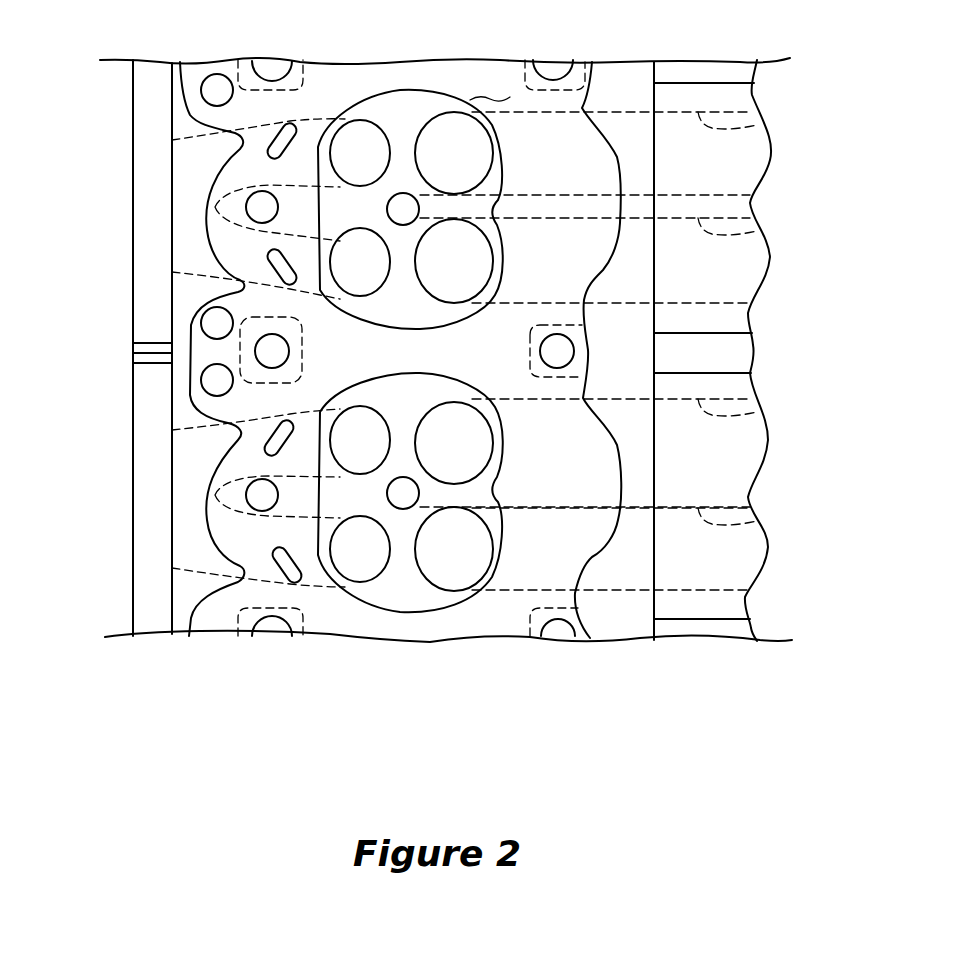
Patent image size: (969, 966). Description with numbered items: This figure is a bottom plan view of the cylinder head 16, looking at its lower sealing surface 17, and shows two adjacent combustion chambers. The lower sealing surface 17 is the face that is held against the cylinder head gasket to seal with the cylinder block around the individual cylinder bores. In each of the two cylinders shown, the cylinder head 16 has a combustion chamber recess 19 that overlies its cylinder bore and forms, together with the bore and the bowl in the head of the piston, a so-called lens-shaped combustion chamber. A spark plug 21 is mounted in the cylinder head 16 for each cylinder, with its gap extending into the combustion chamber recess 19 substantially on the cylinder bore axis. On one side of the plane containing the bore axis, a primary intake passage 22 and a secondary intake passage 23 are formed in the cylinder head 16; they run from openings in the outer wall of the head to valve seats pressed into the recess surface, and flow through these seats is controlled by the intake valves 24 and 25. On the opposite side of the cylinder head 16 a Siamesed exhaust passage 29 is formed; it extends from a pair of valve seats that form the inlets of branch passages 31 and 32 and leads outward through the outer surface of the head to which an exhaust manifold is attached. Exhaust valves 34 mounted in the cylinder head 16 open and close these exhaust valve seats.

The cylinder head 16 is at (132, 492).
The lower sealing surface 17 is at (490, 82).
The combustion chamber recess 19 is at (420, 105).
The spark plug 21 is at (403, 218).
The primary intake passage 22 is at (757, 125).
The secondary intake passage 23 is at (757, 231).
The intake valve 24 is at (475, 155).
The intake valve 25 is at (475, 260).
The Siamesed exhaust passage 29 is at (198, 272).
The branch passage 31 is at (315, 118).
The branch passage 32 is at (300, 240).
The exhaust valve 34 is at (358, 135).